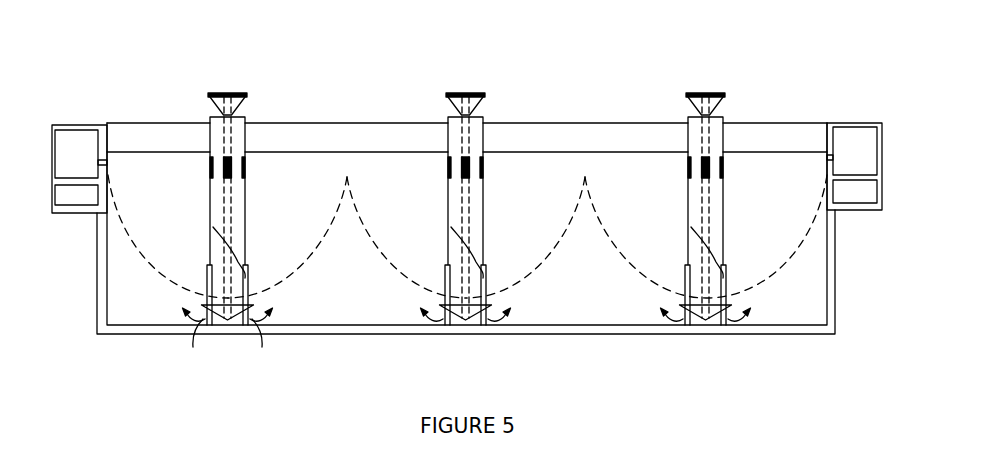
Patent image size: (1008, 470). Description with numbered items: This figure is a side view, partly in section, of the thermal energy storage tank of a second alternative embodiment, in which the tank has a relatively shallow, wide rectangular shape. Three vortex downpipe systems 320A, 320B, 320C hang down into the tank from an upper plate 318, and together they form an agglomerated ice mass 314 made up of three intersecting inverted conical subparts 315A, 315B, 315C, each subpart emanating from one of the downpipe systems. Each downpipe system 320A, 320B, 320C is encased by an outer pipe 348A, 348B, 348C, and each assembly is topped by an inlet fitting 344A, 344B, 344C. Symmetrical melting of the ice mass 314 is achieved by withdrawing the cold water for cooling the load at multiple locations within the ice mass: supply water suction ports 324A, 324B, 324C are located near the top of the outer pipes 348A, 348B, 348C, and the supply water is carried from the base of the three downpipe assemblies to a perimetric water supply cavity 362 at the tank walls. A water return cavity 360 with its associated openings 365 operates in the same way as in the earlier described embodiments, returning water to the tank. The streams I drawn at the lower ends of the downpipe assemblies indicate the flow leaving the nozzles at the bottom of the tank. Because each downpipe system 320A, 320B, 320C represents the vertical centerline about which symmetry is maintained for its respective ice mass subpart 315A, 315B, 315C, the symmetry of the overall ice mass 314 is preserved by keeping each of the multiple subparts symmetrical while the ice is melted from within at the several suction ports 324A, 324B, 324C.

The agglomerated ice mass 314 is at (306, 268).
The ice mass subpart 315A is at (190, 248).
The ice mass subpart 315B is at (466, 249).
The ice mass subpart 315C is at (706, 248).
The top plate 318 is at (563, 138).
The vortex downpipe system 320A is at (208, 231).
The vortex downpipe system 320B is at (446, 231).
The vortex downpipe system 320C is at (686, 229).
The supply water suction port 324A is at (228, 181).
The supply water suction port 324B is at (468, 182).
The supply water suction port 324C is at (708, 181).
The nozzle inlet cap A 344A is at (232, 93).
The nozzle inlet cap B 344B is at (472, 93).
The nozzle inlet cap C 344C is at (712, 93).
The outer pipe 348A is at (247, 229).
The outer pipe 348B is at (485, 227).
The outer pipe 348C is at (725, 228).
The water return cavity 360 is at (76, 155).
The perimetric water supply cavity 362 is at (80, 195).
The openings 365 is at (107, 162).
The spray stream I is at (227, 345).